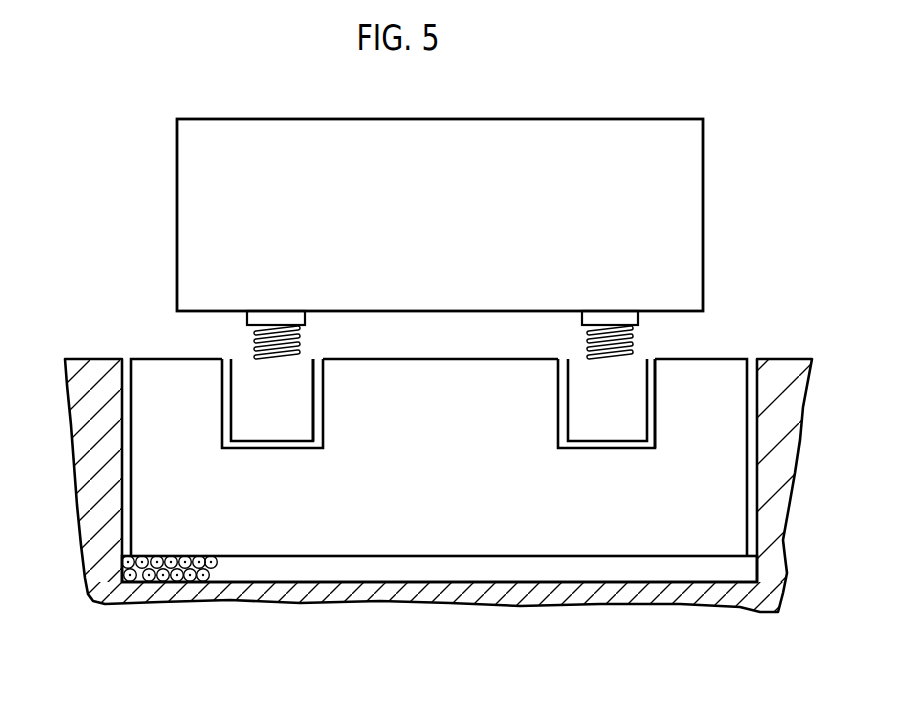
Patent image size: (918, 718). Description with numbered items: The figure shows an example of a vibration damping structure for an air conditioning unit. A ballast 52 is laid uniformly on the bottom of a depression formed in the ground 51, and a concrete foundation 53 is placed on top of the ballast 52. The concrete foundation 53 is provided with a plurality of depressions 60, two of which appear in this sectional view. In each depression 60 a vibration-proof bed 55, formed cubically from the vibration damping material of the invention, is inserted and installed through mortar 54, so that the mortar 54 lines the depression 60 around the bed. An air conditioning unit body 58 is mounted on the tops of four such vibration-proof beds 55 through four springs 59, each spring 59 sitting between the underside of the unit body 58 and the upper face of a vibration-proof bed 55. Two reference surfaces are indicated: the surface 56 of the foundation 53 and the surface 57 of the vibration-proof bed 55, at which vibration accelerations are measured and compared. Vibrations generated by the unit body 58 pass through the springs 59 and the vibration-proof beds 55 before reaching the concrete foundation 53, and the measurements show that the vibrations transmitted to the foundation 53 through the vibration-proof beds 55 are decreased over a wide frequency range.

The ground 51 is at (508, 590).
The ballast 52 is at (160, 582).
The concrete foundation 53 is at (368, 544).
The mortar 54 is at (267, 448).
The vibration-proof bed 55 is at (243, 398).
The surface of the foundation 56 is at (150, 357).
The surface of the vibration-proof bed 57 is at (312, 357).
The air conditioning unit body 58 is at (705, 265).
The spring 59 is at (248, 333).
The depression 60 is at (652, 392).